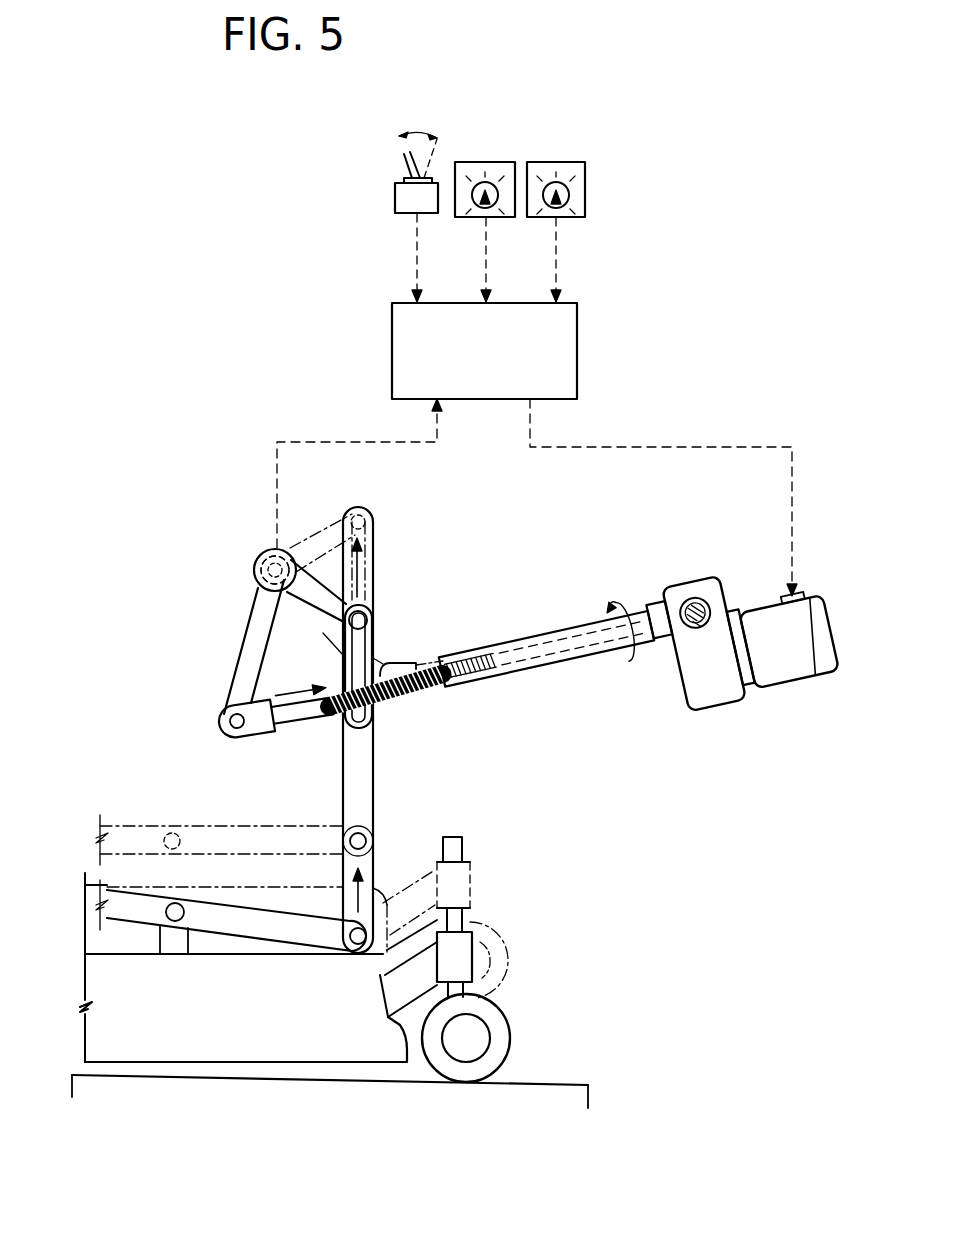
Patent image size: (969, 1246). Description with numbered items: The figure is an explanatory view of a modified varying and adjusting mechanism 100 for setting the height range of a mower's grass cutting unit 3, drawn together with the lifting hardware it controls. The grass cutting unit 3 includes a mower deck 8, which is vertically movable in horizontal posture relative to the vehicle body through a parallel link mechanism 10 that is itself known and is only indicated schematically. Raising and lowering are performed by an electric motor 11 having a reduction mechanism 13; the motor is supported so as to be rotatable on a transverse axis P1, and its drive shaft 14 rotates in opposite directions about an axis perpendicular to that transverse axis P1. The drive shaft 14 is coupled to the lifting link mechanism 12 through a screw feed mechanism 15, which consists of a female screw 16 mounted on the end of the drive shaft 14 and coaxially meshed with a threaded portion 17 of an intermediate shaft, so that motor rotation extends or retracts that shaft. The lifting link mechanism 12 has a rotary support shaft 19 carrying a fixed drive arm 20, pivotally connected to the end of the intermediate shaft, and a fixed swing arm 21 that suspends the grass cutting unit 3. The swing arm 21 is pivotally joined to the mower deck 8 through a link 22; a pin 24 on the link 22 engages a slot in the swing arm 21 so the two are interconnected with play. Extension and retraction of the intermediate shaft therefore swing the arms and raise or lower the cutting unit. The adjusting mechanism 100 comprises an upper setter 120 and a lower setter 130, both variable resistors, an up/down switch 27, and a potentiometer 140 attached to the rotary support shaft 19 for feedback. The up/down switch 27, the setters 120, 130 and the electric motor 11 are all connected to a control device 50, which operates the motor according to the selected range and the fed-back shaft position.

The grass cutting unit 3 is at (199, 1062).
The mower deck 8 is at (310, 1048).
The parallel link mechanism 10 is at (118, 820).
The electric motor 11 is at (783, 683).
The lifting link mechanism 12 is at (419, 786).
The reduction mechanism 13 is at (704, 657).
The drive shaft 14 is at (663, 642).
The screw feed mechanism 15 is at (527, 657).
The female screw 16 is at (477, 682).
The threaded portion 17 is at (430, 689).
The rotary support shaft 19 is at (254, 580).
The drive arm 20 is at (228, 682).
The swing arm 21 is at (324, 602).
The link 22 is at (343, 805).
The pin 24 is at (310, 719).
The up/down switch 27 is at (395, 198).
The control device 50 is at (577, 370).
The varying and adjusting mechanism 100 is at (658, 332).
The upper setter 120 is at (505, 163).
The lower setter 130 is at (585, 186).
The potentiometer 140 is at (258, 553).
The transverse axis P1 is at (694, 598).